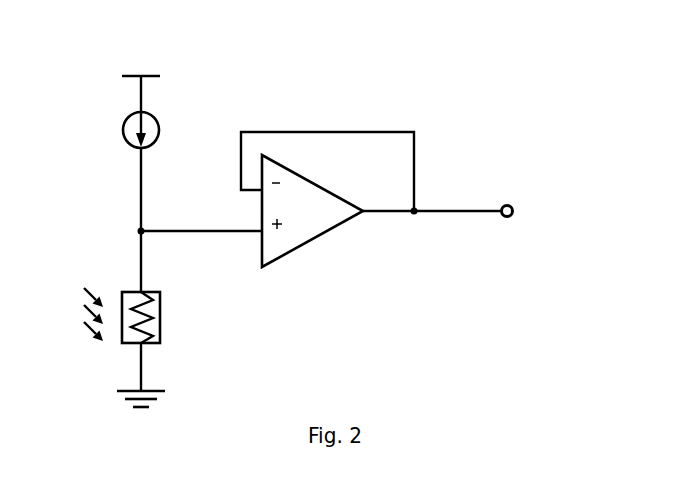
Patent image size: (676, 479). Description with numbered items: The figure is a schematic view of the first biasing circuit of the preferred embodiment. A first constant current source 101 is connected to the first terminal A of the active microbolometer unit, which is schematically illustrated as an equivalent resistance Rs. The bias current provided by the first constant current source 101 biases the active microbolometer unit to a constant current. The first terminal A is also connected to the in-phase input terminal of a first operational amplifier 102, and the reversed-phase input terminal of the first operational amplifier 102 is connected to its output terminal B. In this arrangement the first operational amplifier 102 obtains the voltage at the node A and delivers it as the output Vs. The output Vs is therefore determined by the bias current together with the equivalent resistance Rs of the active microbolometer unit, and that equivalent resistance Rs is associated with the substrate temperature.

The first constant current source 101 is at (171, 115).
The first operational amplifier 102 is at (326, 216).
The first terminal of the active microbolometer unit A is at (127, 225).
The output terminal of the first operational amplifier B is at (420, 232).
The equivalent resistance of the active microbolometer unit Rs is at (159, 317).
The output Vs is at (530, 213).